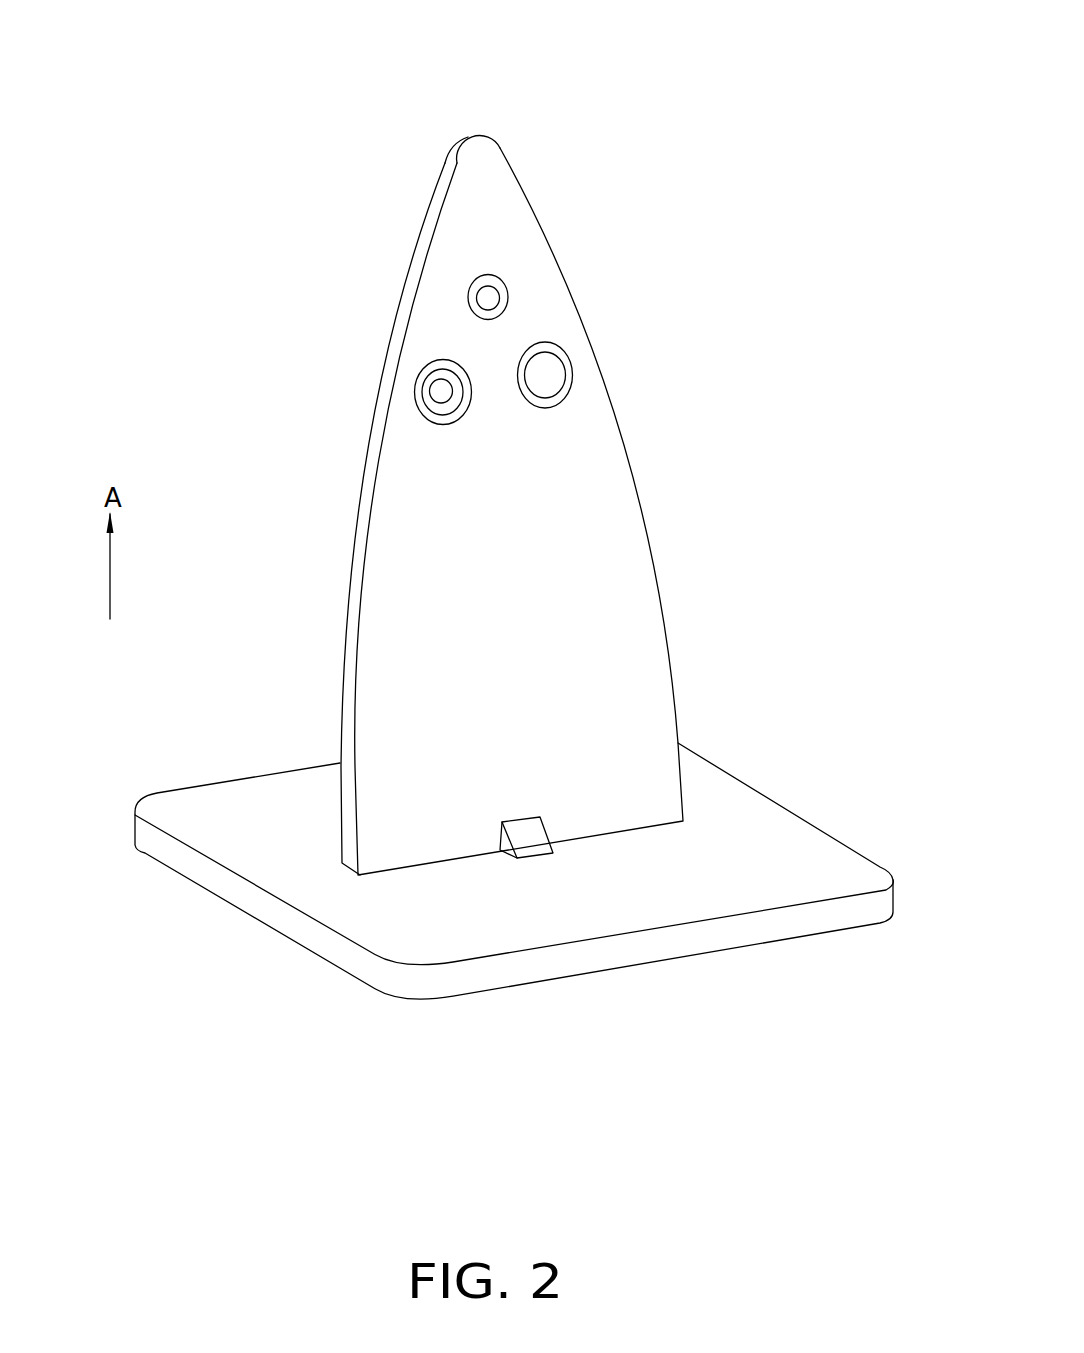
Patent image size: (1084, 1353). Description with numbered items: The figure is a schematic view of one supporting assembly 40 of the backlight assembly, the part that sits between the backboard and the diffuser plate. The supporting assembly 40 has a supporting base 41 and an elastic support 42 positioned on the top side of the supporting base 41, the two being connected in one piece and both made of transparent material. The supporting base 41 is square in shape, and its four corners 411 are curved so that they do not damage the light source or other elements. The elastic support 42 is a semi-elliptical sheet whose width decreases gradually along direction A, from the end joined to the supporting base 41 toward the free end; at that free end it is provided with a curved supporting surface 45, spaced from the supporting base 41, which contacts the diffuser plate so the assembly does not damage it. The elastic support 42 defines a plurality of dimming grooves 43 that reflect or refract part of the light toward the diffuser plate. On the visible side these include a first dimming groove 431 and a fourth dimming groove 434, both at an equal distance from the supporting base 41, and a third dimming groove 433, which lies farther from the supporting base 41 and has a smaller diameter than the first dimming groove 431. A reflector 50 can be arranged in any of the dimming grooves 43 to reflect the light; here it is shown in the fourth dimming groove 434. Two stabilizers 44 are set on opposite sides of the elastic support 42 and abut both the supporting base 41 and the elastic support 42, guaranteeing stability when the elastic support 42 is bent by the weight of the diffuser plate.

The supporting assembly 40 is at (525, 31).
The supporting base 41 is at (228, 887).
The corners 411 is at (405, 979).
The elastic support 42 is at (355, 622).
The dimming grooves 43 is at (566, 342).
The first dimming groove 431 is at (562, 389).
The third dimming groove 433 is at (502, 287).
The fourth dimming groove 434 is at (420, 407).
The stabilizers 44 is at (528, 843).
The supporting surface 45 is at (468, 137).
The reflector 50 is at (438, 387).